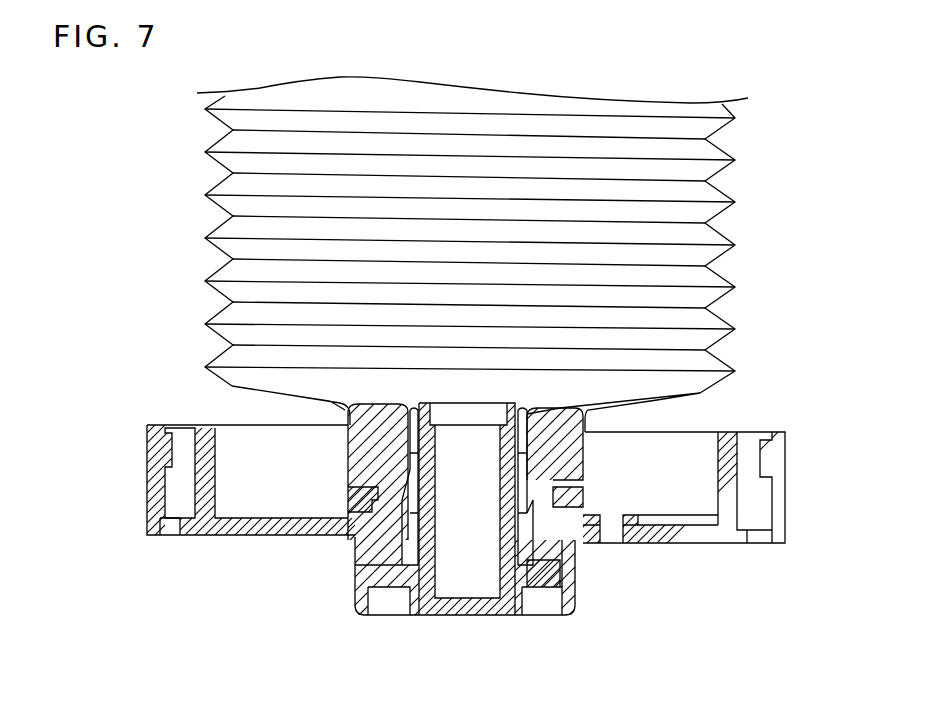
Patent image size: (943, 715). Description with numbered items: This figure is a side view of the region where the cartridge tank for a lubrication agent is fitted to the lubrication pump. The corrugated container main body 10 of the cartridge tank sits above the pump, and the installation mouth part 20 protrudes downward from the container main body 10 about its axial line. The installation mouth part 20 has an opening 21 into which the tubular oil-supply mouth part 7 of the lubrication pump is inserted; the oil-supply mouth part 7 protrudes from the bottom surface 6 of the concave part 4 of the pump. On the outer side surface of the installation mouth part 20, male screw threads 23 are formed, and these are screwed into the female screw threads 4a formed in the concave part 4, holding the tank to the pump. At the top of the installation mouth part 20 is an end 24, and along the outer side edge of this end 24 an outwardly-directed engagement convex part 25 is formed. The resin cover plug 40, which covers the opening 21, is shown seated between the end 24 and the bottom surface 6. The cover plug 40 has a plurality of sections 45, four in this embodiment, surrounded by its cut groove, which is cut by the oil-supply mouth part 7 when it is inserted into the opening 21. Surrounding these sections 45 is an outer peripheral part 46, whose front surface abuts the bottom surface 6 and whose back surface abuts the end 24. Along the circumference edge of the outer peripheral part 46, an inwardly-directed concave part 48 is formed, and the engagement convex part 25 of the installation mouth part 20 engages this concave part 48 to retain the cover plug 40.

The container main body 10 is at (690, 175).
The concave part 4 is at (570, 580).
The female screw threads 4a is at (600, 530).
The installation mouth part 20 is at (353, 467).
The male screw threads 23 is at (358, 545).
The cover plug 40 is at (583, 477).
The sections 45 is at (528, 498).
The oil-supply mouth part 7 is at (468, 573).
The bottom surface 6 is at (423, 610).
The opening 21 is at (412, 563).
The end 24 is at (358, 588).
The outer peripheral part 46 is at (524, 600).
The engagement convex part 25 is at (537, 573).
The inwardly-directed concave part 48 is at (575, 600).